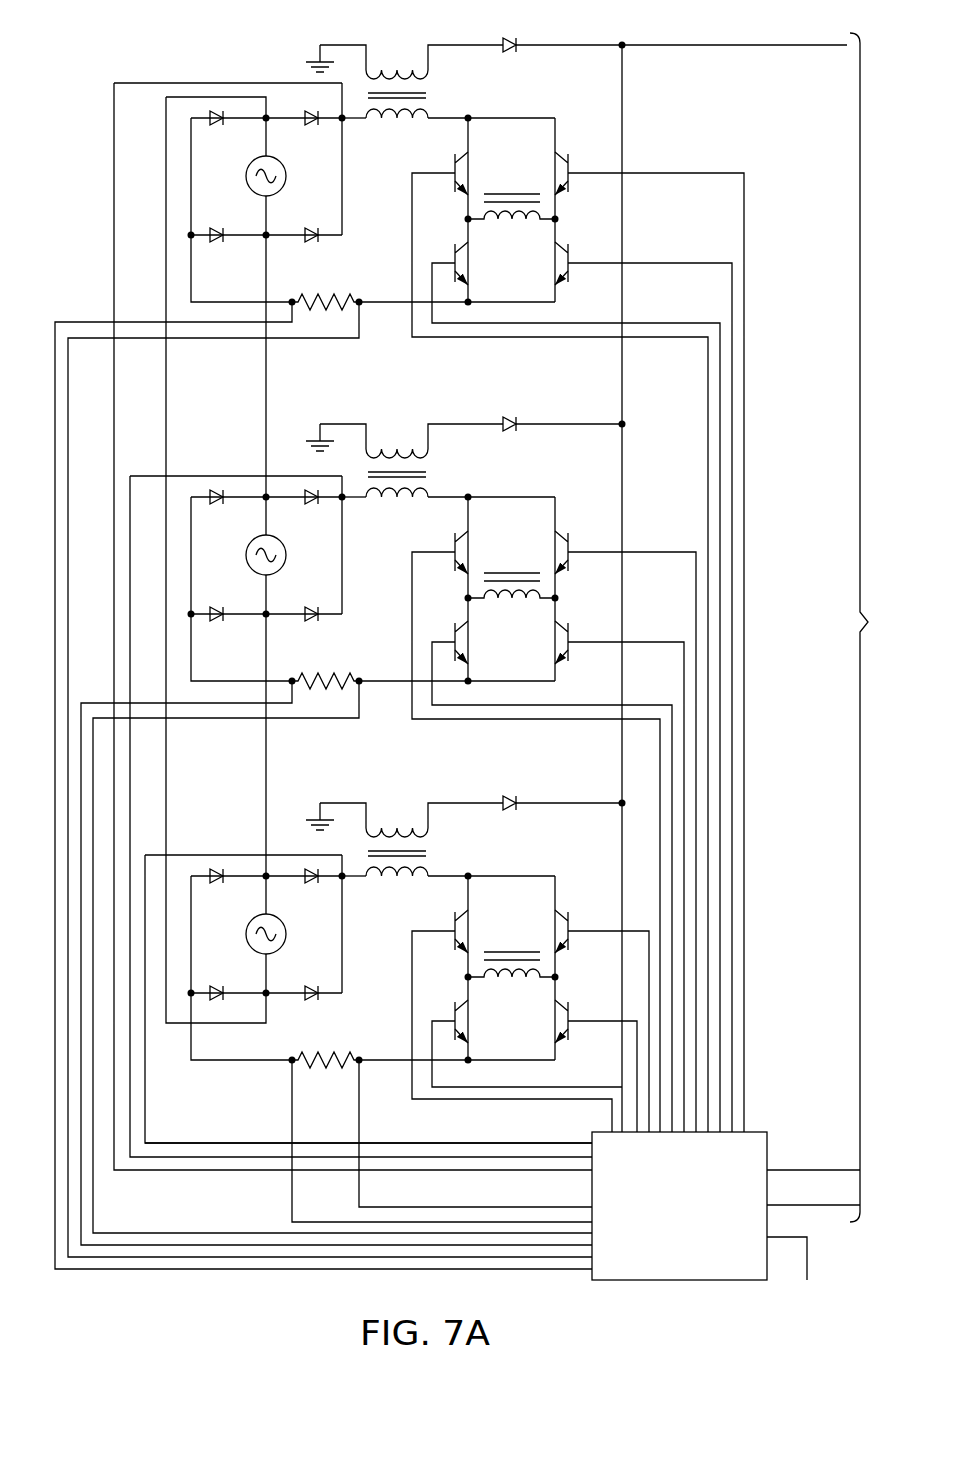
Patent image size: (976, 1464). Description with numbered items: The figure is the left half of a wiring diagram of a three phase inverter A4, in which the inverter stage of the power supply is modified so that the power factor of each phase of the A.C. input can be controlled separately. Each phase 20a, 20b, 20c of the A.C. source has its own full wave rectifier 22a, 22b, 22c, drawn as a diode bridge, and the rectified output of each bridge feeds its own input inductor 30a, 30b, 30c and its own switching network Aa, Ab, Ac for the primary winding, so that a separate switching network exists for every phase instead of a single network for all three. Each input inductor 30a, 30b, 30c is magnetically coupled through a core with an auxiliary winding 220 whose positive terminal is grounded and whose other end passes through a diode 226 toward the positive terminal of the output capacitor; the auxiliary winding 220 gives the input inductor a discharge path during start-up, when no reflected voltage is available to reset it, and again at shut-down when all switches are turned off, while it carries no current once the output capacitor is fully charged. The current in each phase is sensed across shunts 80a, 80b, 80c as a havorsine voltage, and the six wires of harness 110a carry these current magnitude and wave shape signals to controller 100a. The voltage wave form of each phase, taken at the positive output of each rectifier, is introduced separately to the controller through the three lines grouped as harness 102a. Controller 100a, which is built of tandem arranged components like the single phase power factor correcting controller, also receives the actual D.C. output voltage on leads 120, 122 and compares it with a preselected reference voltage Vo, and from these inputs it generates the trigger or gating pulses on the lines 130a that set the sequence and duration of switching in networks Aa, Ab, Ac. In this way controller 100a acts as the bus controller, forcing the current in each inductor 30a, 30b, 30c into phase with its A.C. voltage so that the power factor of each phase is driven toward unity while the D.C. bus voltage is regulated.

The three phase inverter A4 is at (88, 80).
The switching network Aa is at (590, 126).
The switching network Ab is at (588, 503).
The switching network Ac is at (572, 884).
The phase 20a is at (246, 172).
The phase 20b is at (246, 551).
The phase 20c is at (246, 930).
The full wave rectifier 22a is at (348, 200).
The full wave rectifier 22b is at (348, 579).
The full wave rectifier 22c is at (348, 958).
The input inductor 30a is at (393, 122).
The input inductor 30b is at (393, 501).
The input inductor 30c is at (393, 880).
The shunt 80a is at (318, 298).
The shunt 80b is at (318, 677).
The shunt 80c is at (318, 1056).
The auxiliary winding 220 is at (398, 66).
The diode 226 is at (511, 53).
The controller 100a is at (770, 1142).
The harness 102a is at (453, 1138).
The harness 110a is at (468, 1205).
The gating pulse lines 130a is at (606, 1112).
The lead 120 is at (790, 1172).
The lead 122 is at (812, 1207).
The reference voltage Vo is at (795, 1279).